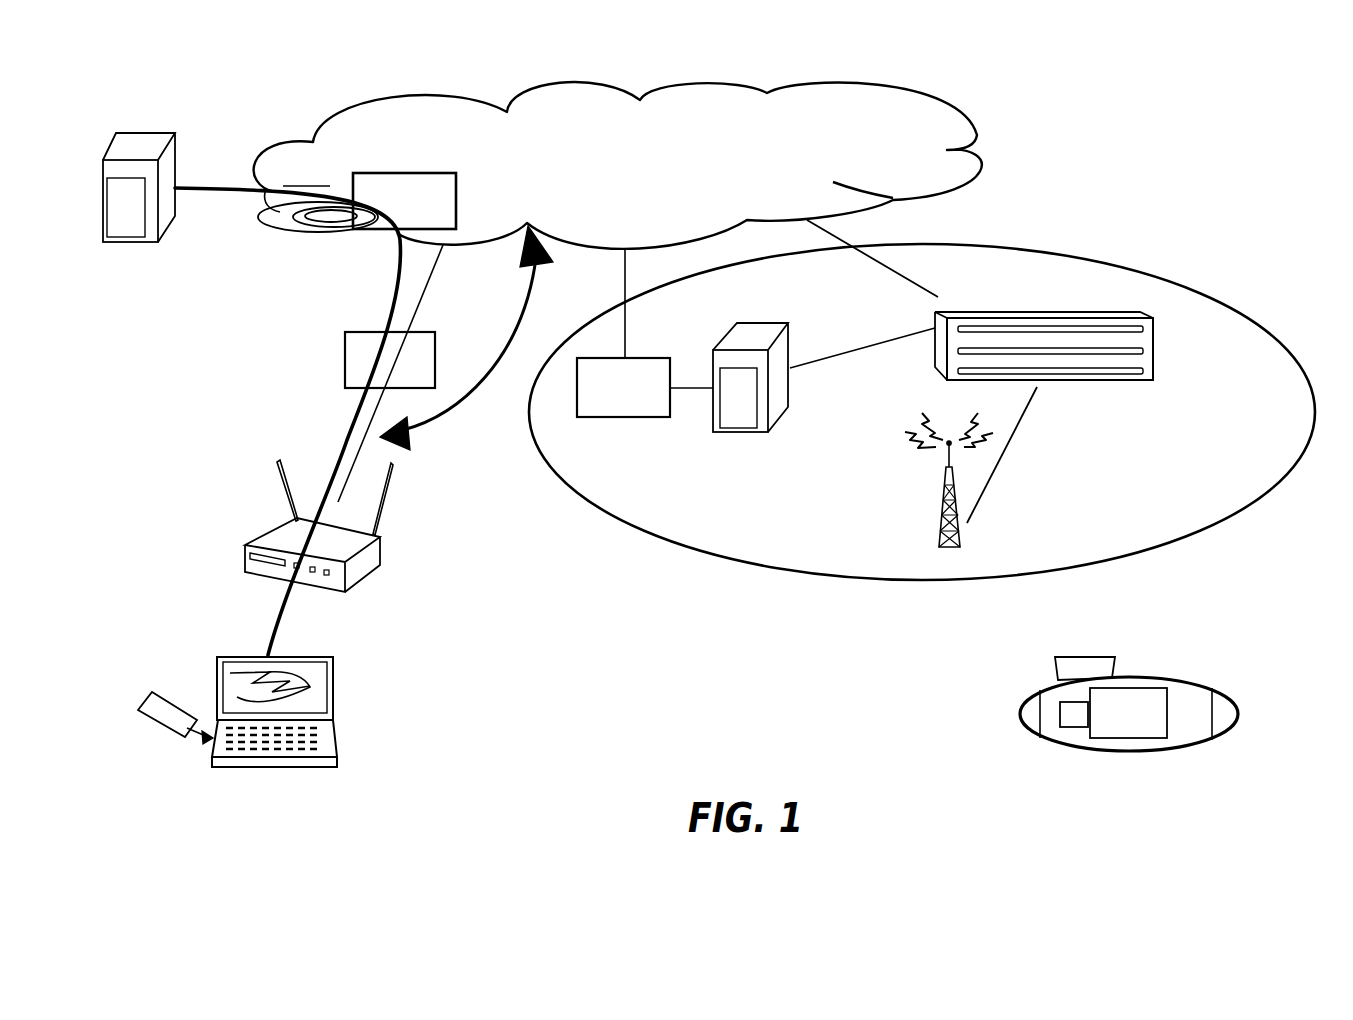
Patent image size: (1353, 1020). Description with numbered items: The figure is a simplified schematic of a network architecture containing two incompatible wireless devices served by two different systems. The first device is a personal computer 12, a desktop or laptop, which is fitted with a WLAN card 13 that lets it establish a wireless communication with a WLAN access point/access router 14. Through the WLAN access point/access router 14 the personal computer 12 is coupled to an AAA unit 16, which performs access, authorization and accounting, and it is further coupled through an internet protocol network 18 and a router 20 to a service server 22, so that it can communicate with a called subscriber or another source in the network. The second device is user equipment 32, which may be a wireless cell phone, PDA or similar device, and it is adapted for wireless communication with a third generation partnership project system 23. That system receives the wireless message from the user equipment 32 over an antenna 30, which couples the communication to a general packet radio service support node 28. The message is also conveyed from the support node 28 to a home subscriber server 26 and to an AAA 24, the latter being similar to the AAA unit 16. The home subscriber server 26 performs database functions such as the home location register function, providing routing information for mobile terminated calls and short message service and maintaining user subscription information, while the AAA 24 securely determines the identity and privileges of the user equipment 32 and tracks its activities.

The personal computer 12 is at (323, 720).
The WLAN card 13 is at (162, 728).
The WLAN access point/access router 14 is at (268, 532).
The AAA unit 16 is at (345, 348).
The internet protocol network 18 is at (782, 168).
The router 20 is at (373, 173).
The service server 22 is at (143, 137).
The third generation partnership project system 23 is at (1167, 543).
The AAA 24 is at (626, 418).
The home subscriber server 26 is at (788, 407).
The general packet radio service support node 28 is at (1080, 312).
The antenna 30 is at (940, 518).
The user equipment 32 is at (1238, 718).